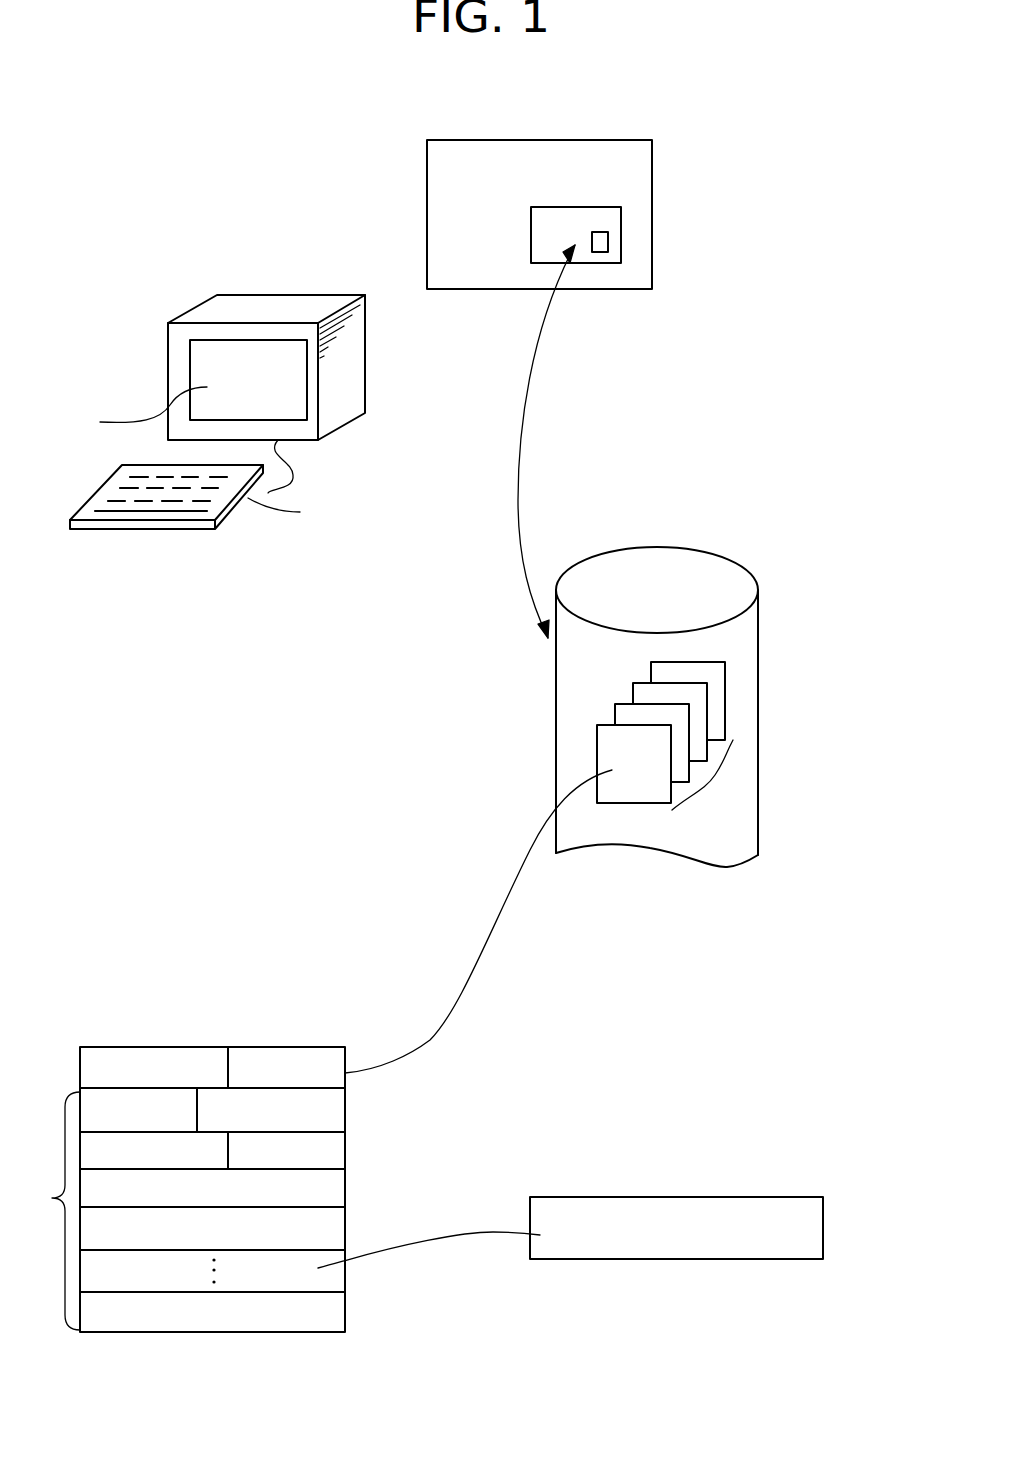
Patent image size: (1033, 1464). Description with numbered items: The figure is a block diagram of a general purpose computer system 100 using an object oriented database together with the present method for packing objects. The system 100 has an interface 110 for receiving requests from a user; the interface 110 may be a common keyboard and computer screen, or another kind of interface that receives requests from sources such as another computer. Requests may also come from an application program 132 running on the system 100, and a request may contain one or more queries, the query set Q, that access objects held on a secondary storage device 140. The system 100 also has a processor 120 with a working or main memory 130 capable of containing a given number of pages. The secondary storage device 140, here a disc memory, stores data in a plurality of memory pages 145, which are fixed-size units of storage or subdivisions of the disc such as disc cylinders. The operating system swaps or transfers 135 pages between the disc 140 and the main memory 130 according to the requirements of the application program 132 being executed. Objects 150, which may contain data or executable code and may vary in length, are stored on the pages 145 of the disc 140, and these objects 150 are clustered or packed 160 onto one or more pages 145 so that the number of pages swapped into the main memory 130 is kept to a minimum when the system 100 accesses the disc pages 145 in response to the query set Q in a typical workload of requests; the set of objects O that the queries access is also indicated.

The general purpose computer system 100 is at (302, 143).
The interface 110 is at (248, 498).
The processor 120 is at (642, 158).
The main memory 130 is at (612, 222).
The application program 132 is at (600, 241).
The page swap 135 is at (522, 447).
The secondary storage device 140 is at (748, 827).
The memory pages 145 is at (693, 702).
The objects 150 is at (570, 1232).
The packing 160 is at (117, 1045).